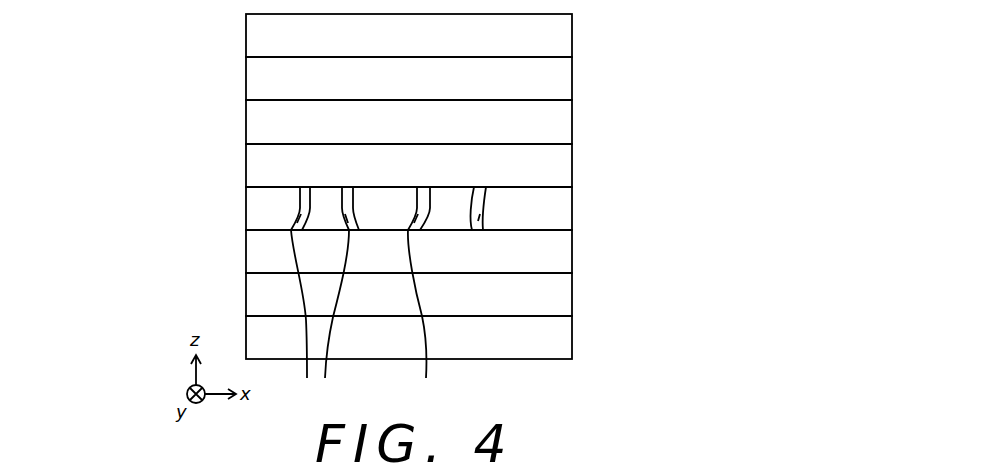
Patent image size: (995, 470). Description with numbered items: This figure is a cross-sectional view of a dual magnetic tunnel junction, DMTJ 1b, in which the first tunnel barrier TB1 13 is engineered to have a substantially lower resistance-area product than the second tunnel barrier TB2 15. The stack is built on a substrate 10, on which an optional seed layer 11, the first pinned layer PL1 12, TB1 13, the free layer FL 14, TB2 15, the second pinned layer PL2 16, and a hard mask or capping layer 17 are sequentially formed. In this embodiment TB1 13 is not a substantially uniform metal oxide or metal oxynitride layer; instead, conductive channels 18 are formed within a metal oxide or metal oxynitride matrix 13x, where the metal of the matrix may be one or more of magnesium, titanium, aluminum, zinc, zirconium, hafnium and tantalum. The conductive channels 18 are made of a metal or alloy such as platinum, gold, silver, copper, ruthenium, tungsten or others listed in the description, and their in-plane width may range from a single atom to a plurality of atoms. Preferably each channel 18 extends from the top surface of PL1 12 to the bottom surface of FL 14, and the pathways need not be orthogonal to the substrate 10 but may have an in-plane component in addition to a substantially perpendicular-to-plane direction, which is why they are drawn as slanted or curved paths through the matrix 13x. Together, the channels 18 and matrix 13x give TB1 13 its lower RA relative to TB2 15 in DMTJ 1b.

The substrate 10 is at (558, 338).
The seed layer 11 is at (558, 295).
The PL1 (first pinned layer) 12 is at (558, 254).
The TB1 (first tunnel barrier layer) 13 is at (632, 187).
The metal oxide or metal oxynitride matrix 13x is at (558, 196).
The FL (free layer) 14 is at (558, 164).
The TB2 (second tunnel barrier layer) 15 is at (558, 121).
The PL2 (second pinned layer) 16 is at (558, 79).
The hard mask or capping layer 17 is at (558, 38).
The conductive channels 18 is at (481, 219).
The DMTJ 1b is at (210, 14).